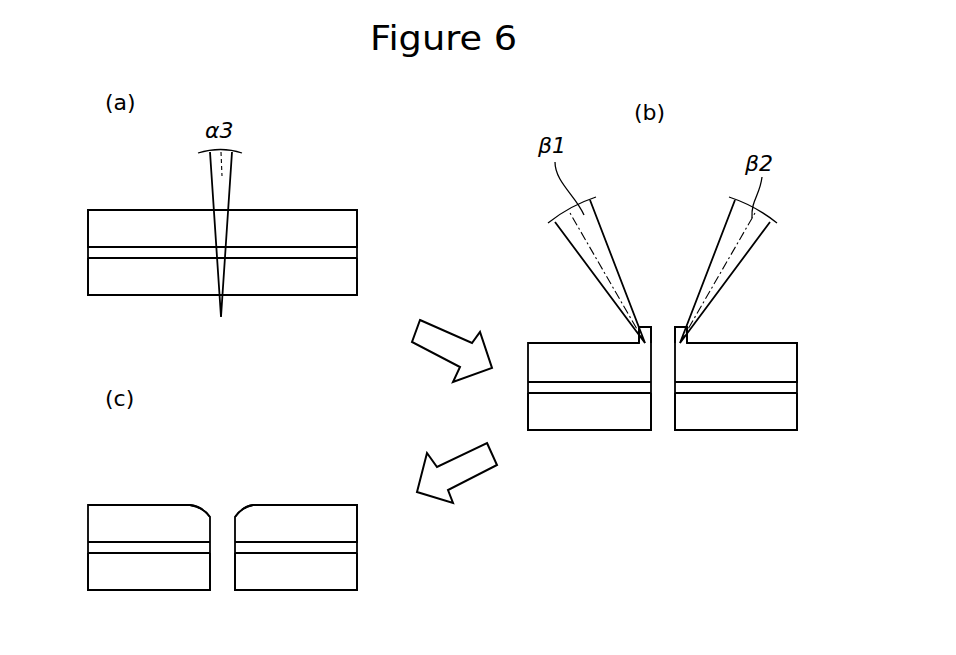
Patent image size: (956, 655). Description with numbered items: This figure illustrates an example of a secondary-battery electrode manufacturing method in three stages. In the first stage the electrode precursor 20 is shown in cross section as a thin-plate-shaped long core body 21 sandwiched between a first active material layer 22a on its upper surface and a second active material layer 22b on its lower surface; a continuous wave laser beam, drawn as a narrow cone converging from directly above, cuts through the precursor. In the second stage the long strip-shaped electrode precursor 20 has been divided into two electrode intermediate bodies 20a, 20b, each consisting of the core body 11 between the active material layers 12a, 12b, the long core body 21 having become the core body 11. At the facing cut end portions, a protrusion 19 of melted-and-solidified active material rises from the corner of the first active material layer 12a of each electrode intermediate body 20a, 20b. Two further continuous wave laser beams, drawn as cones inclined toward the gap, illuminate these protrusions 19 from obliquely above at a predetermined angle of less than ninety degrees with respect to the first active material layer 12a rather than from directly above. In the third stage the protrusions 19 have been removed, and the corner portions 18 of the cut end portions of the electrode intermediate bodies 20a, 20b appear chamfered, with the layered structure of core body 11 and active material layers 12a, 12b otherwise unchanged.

The electrode precursor 20 is at (277, 207).
The first active material layer 22a is at (103, 232).
The long core body 21 is at (95, 253).
The second active material layer 22b is at (95, 280).
The electrode intermediate body 20a is at (562, 341).
The electrode intermediate body 20b is at (763, 341).
The protrusion 19 is at (680, 322).
The first active material layer 12a is at (788, 358).
The core body 11 is at (793, 387).
The active material layer 12b is at (790, 410).
The corner portion 18 is at (207, 508).